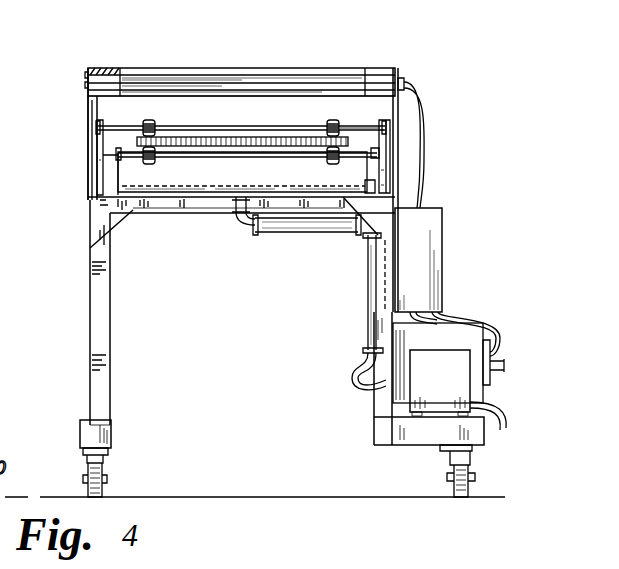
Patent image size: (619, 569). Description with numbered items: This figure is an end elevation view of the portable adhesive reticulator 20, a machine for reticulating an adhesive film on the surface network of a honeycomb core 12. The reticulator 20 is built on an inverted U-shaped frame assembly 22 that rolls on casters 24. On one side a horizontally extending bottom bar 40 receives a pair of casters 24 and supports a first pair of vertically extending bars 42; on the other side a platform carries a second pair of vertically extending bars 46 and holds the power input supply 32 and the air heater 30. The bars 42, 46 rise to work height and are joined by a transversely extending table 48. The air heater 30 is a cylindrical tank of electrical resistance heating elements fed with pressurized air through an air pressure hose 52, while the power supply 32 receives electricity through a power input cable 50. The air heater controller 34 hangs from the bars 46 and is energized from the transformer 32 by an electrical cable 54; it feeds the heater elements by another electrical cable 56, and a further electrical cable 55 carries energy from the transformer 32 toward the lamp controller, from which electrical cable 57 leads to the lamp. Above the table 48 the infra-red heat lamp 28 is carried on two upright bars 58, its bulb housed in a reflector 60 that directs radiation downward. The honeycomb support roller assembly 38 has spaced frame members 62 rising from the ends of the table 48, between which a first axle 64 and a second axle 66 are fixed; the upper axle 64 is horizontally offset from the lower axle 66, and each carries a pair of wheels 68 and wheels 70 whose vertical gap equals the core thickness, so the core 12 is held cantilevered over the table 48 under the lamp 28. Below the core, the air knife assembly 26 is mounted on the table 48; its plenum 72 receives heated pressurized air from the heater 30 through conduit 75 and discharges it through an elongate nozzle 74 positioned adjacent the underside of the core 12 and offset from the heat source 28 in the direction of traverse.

The honeycomb core 12 is at (347, 114).
The portable adhesive reticulator 20 is at (88, 262).
The frame assembly 22 is at (123, 441).
The casters 24 is at (450, 486).
The air knife assembly 26 is at (112, 169).
The infra-red heat lamp 28 is at (278, 68).
The air heater 30 is at (493, 328).
The power input supply 32 is at (452, 392).
The air heater controller 34 is at (425, 256).
The honeycomb support roller assembly 38 is at (127, 123).
The bottom bar 40 is at (82, 431).
The first pair of vertically extending bars 42 is at (110, 342).
The second pair of vertically extending bars 46 is at (374, 428).
The table 48 is at (190, 214).
The power input cable 50 is at (490, 428).
The air pressure hose 52 is at (496, 364).
The electrical cable 54 is at (384, 322).
The electrical cable 55 is at (356, 378).
The electrical cable 56 is at (440, 323).
The electrical cable 57 is at (424, 115).
The upright bars 58 is at (88, 108).
The reflector 60 is at (172, 78).
The frame members 62 is at (98, 146).
The first axle 64 is at (253, 128).
The second axle 66 is at (222, 158).
The wheels 68 is at (150, 122).
The wheels 70 is at (160, 164).
The plenum 72 is at (372, 179).
The nozzle 74 is at (381, 150).
The conduit 75 is at (290, 234).